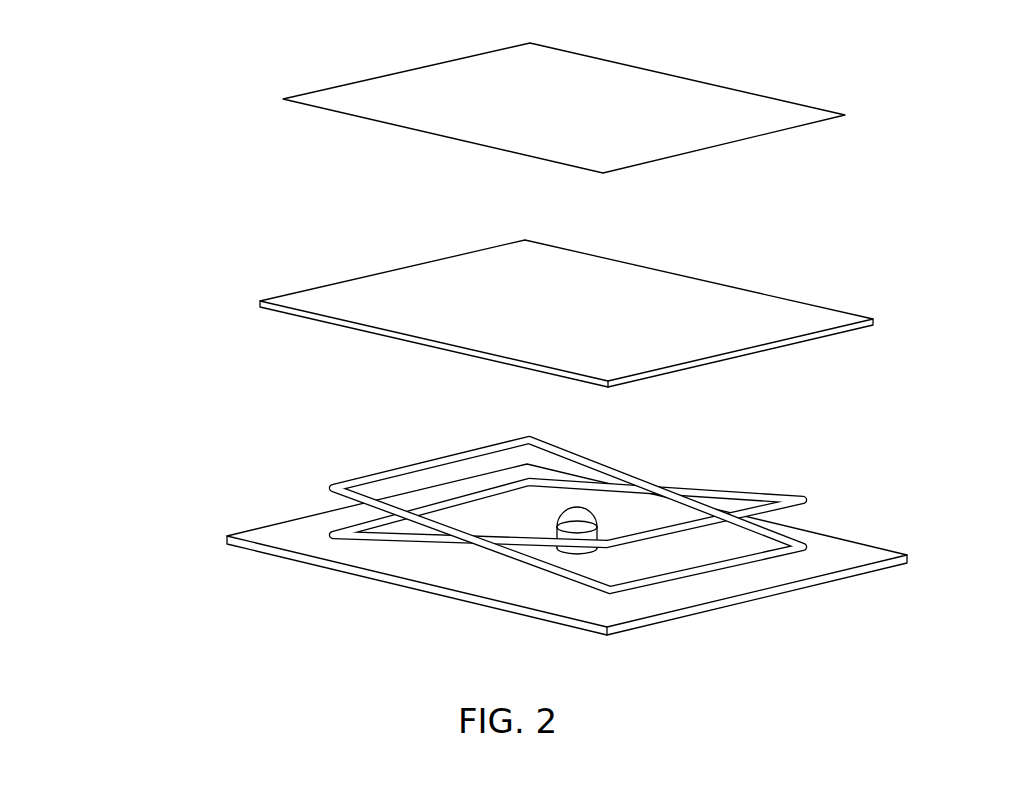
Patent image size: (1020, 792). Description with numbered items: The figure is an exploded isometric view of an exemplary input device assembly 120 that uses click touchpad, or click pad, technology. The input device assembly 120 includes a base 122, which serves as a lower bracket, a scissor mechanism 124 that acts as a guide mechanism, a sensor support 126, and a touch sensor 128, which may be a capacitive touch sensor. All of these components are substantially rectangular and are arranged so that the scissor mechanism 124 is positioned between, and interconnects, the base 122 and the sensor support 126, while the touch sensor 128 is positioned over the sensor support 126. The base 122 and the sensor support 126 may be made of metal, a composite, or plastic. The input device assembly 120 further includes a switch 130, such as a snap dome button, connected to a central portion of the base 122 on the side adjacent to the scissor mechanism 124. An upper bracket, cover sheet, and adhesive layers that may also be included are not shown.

The input device assembly 120 is at (158, 93).
The base 122 is at (243, 543).
The scissor mechanism 124 is at (330, 473).
The sensor support 126 is at (350, 290).
The touch sensor 128 is at (373, 88).
The switch 130 is at (610, 512).